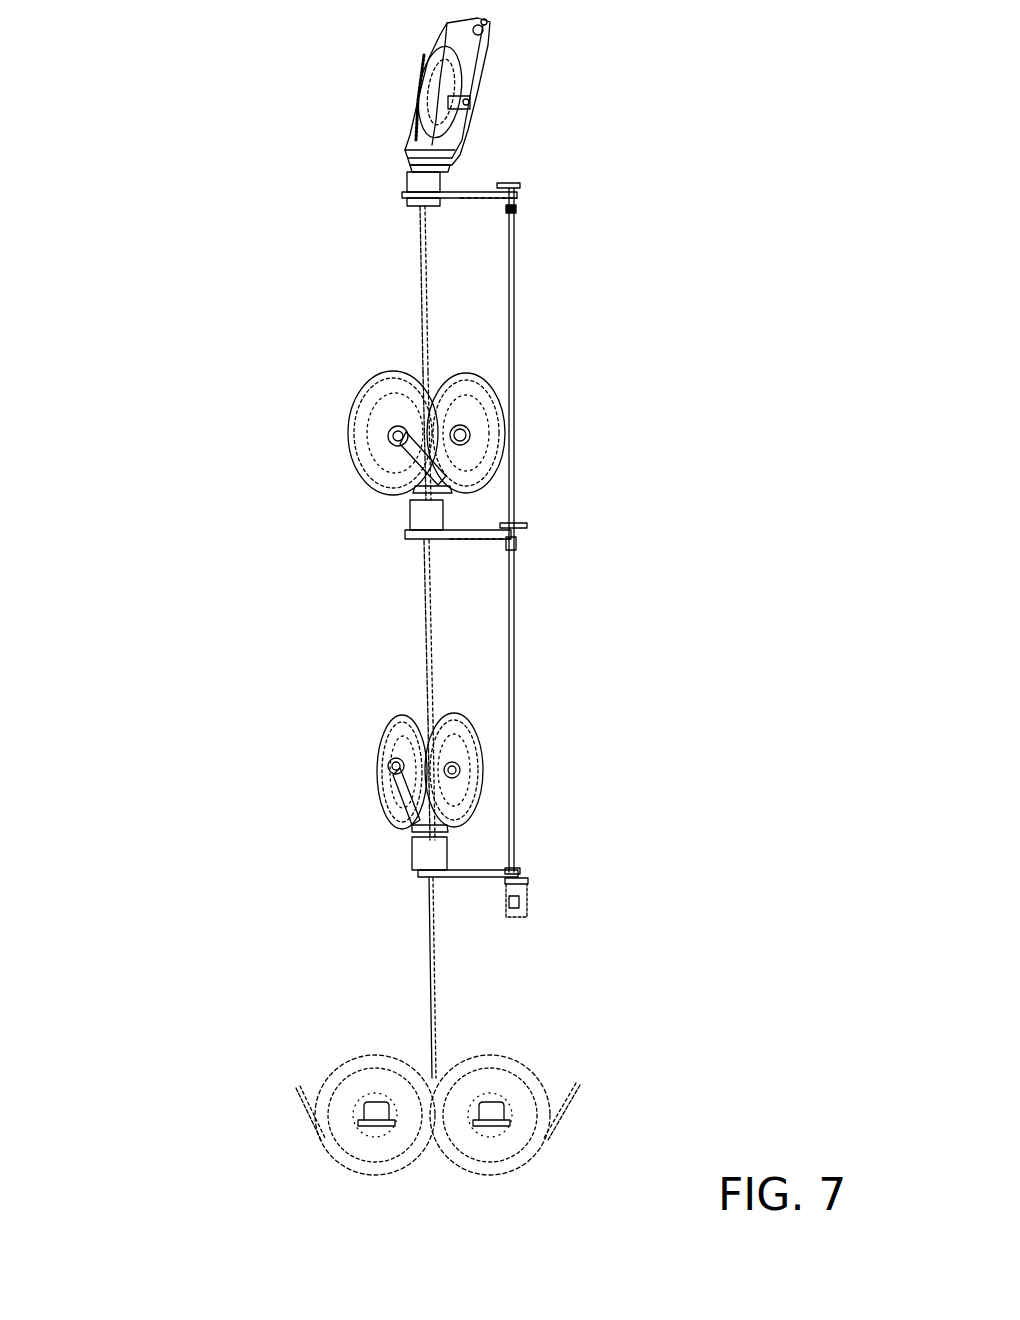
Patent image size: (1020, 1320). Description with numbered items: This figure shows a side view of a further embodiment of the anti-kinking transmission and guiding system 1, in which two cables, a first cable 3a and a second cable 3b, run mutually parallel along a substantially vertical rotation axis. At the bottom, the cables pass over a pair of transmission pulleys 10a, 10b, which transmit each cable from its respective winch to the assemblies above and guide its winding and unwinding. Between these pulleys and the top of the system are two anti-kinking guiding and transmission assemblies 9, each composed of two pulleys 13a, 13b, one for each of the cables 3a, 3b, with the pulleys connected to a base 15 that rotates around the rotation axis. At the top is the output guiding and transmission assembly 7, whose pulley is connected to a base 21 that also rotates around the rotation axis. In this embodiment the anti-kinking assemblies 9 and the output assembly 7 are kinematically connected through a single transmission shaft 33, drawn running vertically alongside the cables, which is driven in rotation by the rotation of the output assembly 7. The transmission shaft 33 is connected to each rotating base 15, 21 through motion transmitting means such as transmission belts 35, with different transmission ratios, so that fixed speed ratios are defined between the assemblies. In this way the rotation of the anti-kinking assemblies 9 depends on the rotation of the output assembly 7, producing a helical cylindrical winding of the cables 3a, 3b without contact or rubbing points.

The anti-kinking transmission and guiding system 1 is at (615, 160).
The output guiding and transmission assembly 7 is at (367, 70).
The base 21 is at (423, 184).
The transmission belt 35 is at (470, 196).
The transmission shaft 33 is at (511, 587).
The second cable 3b is at (415, 333).
The first cable 3a is at (428, 368).
The anti-kinking guiding and transmission assembly 9 is at (379, 601).
The pulley 13a is at (492, 437).
The pulley 13b is at (380, 428).
The base 15 is at (425, 508).
The transmission pulley 10a is at (503, 1127).
The transmission pulley 10b is at (375, 1072).